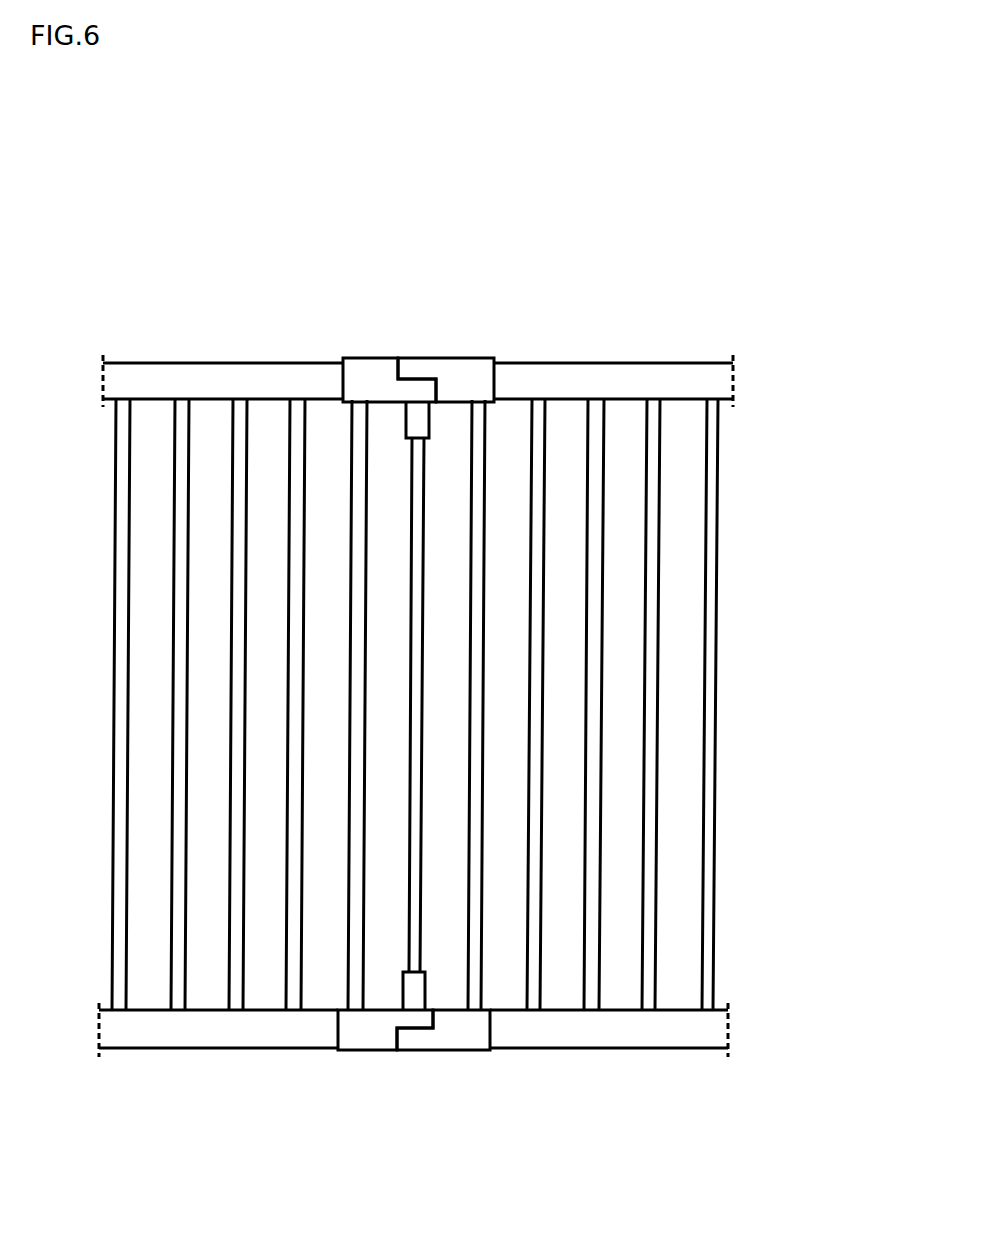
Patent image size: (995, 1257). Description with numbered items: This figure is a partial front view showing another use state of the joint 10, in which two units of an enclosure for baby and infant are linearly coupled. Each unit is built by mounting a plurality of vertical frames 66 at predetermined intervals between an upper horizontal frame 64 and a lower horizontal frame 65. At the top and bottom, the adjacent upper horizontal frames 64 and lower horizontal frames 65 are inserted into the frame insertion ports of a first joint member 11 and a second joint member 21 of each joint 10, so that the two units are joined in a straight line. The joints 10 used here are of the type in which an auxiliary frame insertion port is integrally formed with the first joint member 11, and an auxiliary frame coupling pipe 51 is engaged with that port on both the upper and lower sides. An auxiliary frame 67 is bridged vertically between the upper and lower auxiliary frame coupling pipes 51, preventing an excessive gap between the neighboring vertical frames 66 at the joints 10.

The joint 10 is at (415, 332).
The first joint member 11 is at (370, 367).
The second joint member 21 is at (470, 367).
The auxiliary frame coupling pipe 51 is at (405, 422).
The upper horizontal frame 64 is at (218, 370).
The lower horizontal frame 65 is at (197, 1040).
The vertical frame 66 is at (114, 716).
The auxiliary frame 67 is at (422, 663).